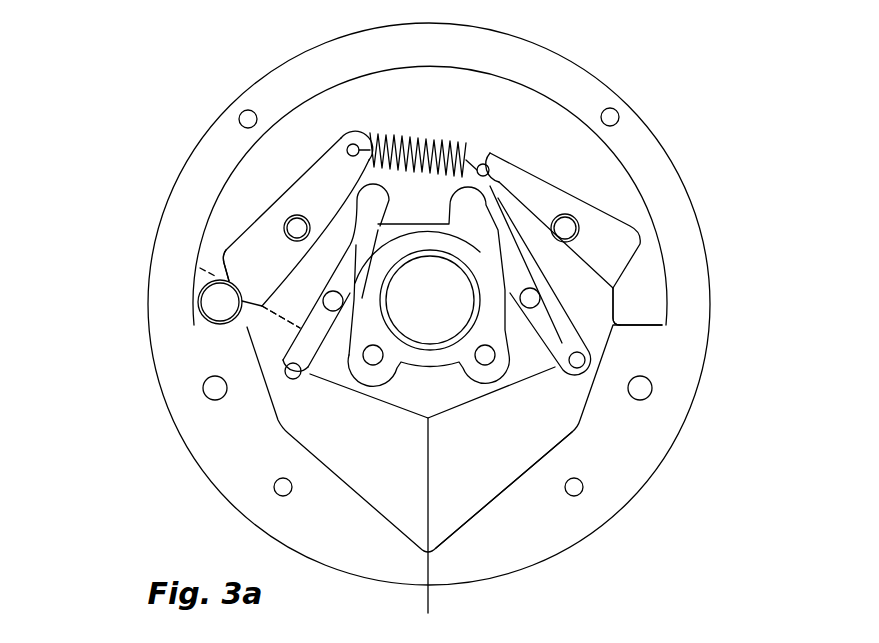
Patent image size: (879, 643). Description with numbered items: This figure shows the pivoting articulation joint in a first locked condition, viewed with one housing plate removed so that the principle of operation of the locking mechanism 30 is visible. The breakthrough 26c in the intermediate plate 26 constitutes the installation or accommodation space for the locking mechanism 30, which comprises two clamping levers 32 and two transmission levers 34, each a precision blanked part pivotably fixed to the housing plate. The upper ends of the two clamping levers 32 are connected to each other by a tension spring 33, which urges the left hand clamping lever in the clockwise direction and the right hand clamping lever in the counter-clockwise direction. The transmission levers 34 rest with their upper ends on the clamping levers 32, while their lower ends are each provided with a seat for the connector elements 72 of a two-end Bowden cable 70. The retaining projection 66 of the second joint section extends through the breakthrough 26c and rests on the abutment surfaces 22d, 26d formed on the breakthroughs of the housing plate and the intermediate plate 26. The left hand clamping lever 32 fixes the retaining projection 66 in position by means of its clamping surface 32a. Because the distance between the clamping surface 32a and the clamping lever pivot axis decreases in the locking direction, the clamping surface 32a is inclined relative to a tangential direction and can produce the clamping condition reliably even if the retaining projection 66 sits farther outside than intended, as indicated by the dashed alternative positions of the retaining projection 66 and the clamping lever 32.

The abutment surface 22d is at (300, 335).
The intermediate plate 26 is at (638, 452).
The breakthrough 26c is at (490, 478).
The abutment surface 26d is at (150, 346).
The locking mechanism 30 is at (648, 265).
The clamping lever 32 is at (330, 183).
The clamping surface 32a is at (240, 270).
The tension spring 33 is at (433, 140).
The transmission lever 34 is at (310, 338).
The retaining projection 66 is at (215, 313).
The 2-end Bowden cable 70 is at (428, 478).
The connector element 72 is at (293, 372).